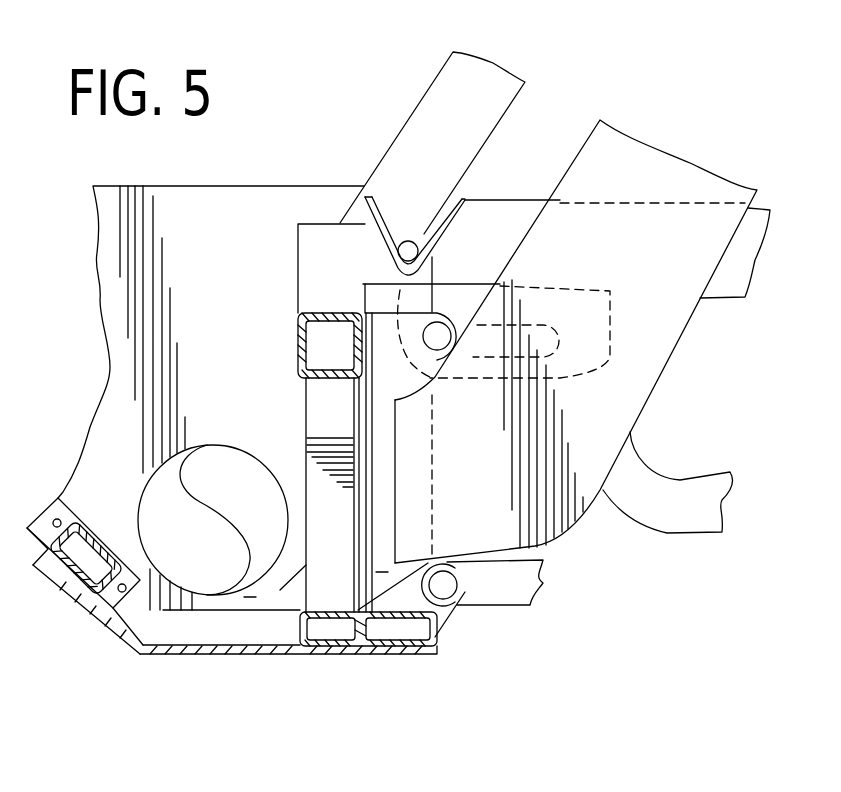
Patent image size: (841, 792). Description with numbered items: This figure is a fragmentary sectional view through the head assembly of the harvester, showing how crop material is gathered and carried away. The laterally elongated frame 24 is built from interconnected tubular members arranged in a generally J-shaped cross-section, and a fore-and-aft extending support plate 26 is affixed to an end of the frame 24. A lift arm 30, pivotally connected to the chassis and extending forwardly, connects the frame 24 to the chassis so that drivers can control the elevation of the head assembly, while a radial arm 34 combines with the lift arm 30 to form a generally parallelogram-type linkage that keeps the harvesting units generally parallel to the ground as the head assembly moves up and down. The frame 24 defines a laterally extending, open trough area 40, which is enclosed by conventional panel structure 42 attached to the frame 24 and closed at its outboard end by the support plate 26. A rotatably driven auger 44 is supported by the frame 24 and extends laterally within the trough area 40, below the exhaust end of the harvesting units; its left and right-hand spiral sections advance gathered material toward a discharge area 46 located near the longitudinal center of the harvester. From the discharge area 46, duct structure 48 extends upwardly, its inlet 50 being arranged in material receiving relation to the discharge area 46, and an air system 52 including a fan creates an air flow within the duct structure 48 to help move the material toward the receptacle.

The frame 24 is at (322, 402).
The support plate 26 is at (282, 203).
The lift arm 30 is at (498, 222).
The radial arm 34 is at (503, 595).
The trough area 40 is at (250, 597).
The panel structure 42 is at (200, 658).
The auger 44 is at (132, 489).
The discharge area 46 is at (382, 572).
The duct structure 48 is at (583, 168).
The inlet 50 is at (390, 527).
The air system 52 is at (624, 528).